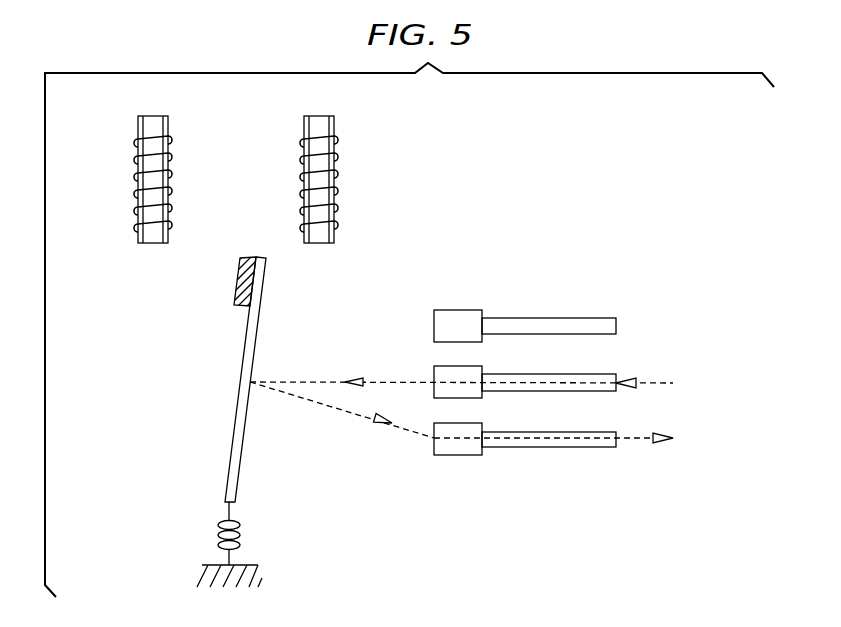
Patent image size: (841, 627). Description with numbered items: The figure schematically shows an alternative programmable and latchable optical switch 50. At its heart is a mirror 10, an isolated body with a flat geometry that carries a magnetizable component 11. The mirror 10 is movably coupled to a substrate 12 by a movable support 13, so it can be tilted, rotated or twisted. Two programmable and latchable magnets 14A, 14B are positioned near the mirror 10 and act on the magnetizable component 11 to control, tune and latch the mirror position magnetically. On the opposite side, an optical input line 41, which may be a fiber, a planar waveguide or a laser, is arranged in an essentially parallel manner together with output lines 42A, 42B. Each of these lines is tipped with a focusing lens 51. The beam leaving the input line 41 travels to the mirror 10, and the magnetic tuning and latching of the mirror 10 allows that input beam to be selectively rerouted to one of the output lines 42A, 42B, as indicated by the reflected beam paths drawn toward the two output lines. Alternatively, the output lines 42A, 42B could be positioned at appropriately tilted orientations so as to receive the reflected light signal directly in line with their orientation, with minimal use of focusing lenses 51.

The mirror 10 is at (246, 420).
The magnetizable component 11 is at (236, 286).
The substrate 12 is at (213, 565).
The movable support 13 is at (241, 536).
The programmable and latchable magnet 14A is at (168, 121).
The programmable and latchable magnet 14B is at (334, 121).
The optical input line 41 is at (598, 374).
The output line 42A is at (565, 318).
The output line 42B is at (566, 447).
The programmable and latchable optical switch 50 is at (536, 197).
The focusing lens 51 is at (455, 310).